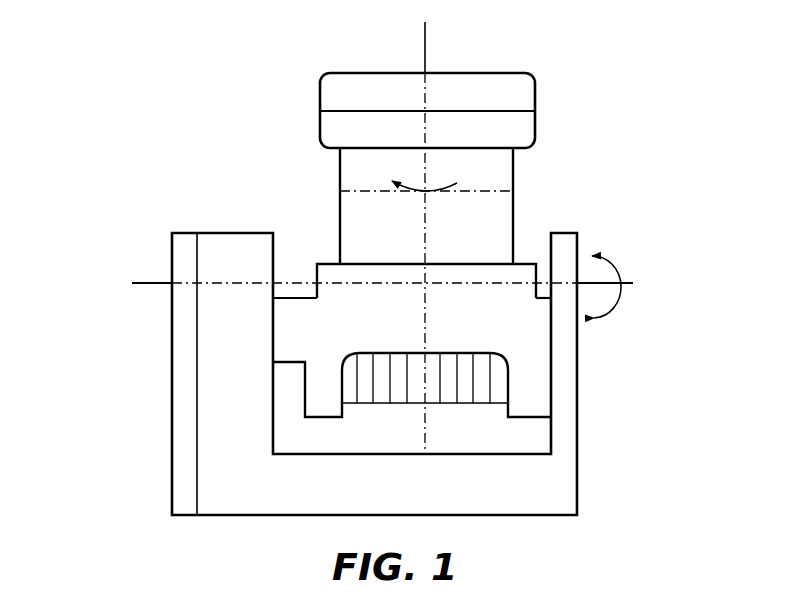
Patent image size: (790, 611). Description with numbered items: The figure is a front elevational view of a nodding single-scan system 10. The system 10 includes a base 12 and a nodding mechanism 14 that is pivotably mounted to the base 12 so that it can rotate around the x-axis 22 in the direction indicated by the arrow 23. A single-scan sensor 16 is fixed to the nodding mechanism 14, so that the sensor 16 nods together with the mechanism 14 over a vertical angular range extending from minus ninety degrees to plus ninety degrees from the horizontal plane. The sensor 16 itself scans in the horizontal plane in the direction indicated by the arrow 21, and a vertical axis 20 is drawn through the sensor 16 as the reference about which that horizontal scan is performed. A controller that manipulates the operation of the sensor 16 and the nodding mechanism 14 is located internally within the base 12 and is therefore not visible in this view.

The nodding single-scan system 10 is at (108, 424).
The base 12 is at (528, 487).
The nodding mechanism 14 is at (535, 385).
The single-scan sensor 16 is at (517, 125).
The Y axis 20 is at (425, 62).
The arrow 21 is at (448, 186).
The x-axis 22 is at (147, 285).
The arrow 23 is at (618, 298).